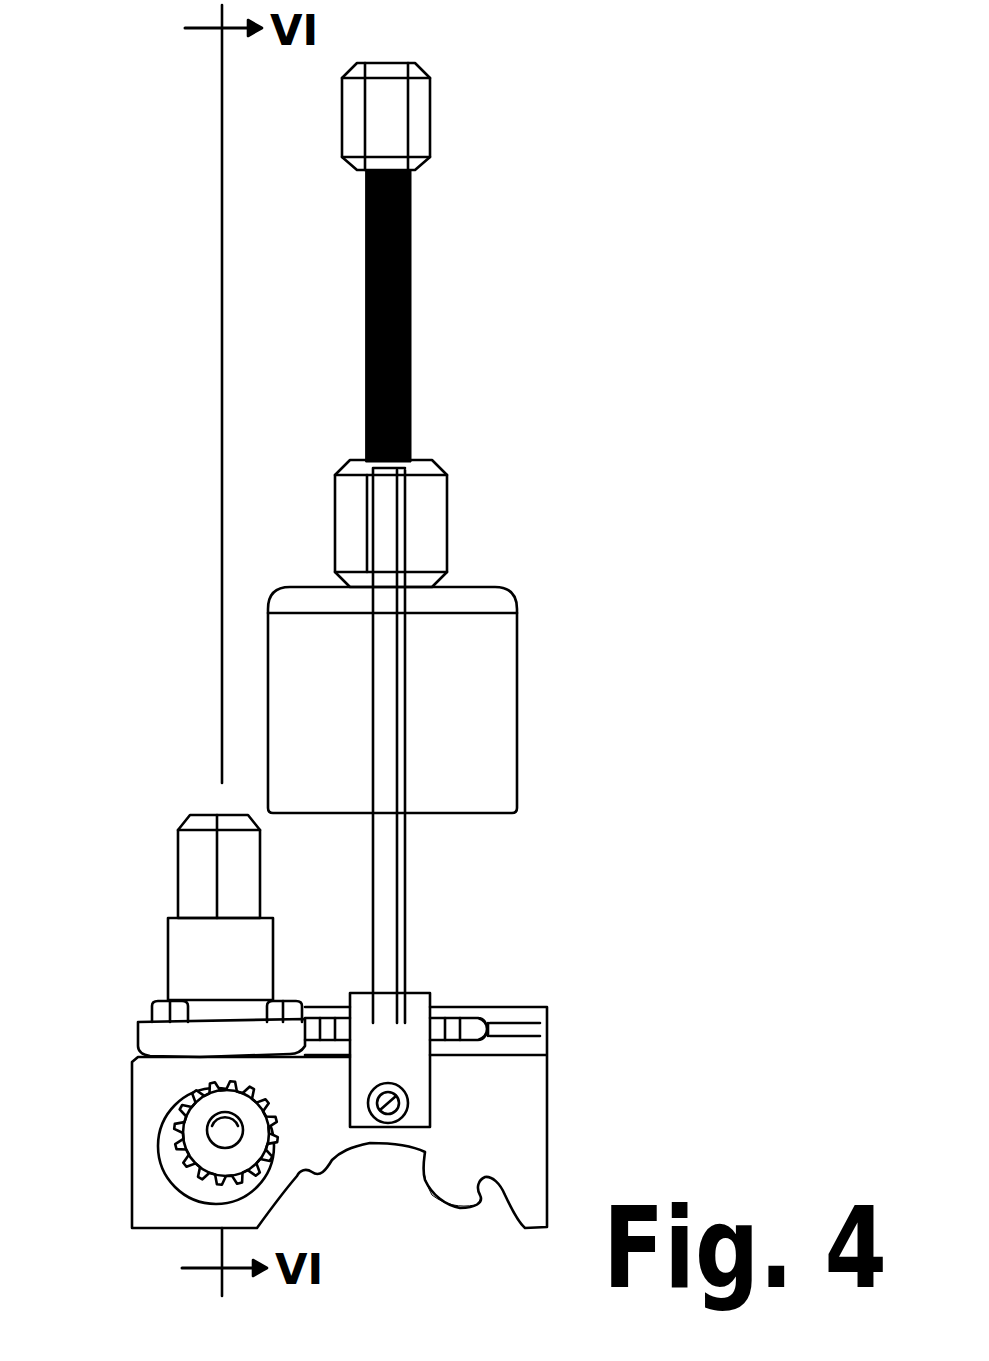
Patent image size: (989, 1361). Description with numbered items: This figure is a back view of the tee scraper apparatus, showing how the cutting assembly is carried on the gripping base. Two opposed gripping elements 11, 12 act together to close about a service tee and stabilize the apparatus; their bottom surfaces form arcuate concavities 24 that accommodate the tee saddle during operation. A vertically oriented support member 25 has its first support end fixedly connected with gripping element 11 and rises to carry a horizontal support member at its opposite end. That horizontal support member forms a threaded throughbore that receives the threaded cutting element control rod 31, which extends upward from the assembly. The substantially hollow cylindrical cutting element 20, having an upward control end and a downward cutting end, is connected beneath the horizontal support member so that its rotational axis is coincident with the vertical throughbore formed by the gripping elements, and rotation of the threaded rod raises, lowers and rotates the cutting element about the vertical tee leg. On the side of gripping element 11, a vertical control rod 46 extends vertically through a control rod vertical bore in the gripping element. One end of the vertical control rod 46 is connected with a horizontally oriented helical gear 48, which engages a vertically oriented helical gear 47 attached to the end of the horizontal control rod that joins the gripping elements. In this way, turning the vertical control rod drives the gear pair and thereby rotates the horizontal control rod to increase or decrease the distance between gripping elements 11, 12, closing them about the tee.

The gripping element 11 is at (547, 1045).
The gripping element 12 is at (517, 1006).
The hollow cylindrical cutting element 20 is at (517, 673).
The arcuate concavities 24 is at (473, 1208).
The vertically oriented support member 25 is at (406, 870).
The threaded cutting element control rod 31 is at (412, 285).
The vertical control rod 46 is at (178, 860).
The vertically oriented helical gear 47 is at (165, 1122).
The horizontally oriented helical gear 48 is at (190, 1088).